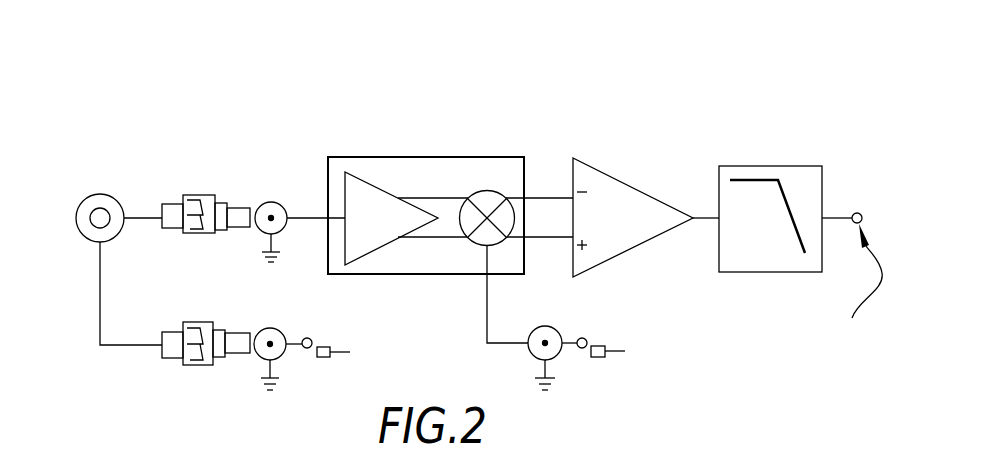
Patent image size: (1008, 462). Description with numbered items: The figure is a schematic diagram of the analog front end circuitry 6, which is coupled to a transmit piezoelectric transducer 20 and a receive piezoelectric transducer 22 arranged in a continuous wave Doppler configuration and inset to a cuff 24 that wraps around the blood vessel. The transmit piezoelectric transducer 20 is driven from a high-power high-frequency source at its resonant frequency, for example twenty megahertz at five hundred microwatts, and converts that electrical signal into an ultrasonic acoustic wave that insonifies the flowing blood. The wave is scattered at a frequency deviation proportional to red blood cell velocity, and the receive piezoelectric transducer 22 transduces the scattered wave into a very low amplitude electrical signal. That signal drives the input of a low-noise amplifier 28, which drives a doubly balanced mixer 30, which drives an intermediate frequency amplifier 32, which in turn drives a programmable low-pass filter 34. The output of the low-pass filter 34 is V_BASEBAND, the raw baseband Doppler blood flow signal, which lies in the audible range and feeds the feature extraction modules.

The analog front end circuitry 6 is at (706, 61).
The transmit piezoelectric transducer 20 is at (207, 365).
The receive piezoelectric transducer 22 is at (198, 198).
The cuff 24 is at (92, 196).
The low-noise amplifier 28 is at (368, 178).
The doubly balanced mixer 30 is at (491, 190).
The intermediate frequency amplifier 32 is at (615, 178).
The programmable low-pass filter 34 is at (770, 166).